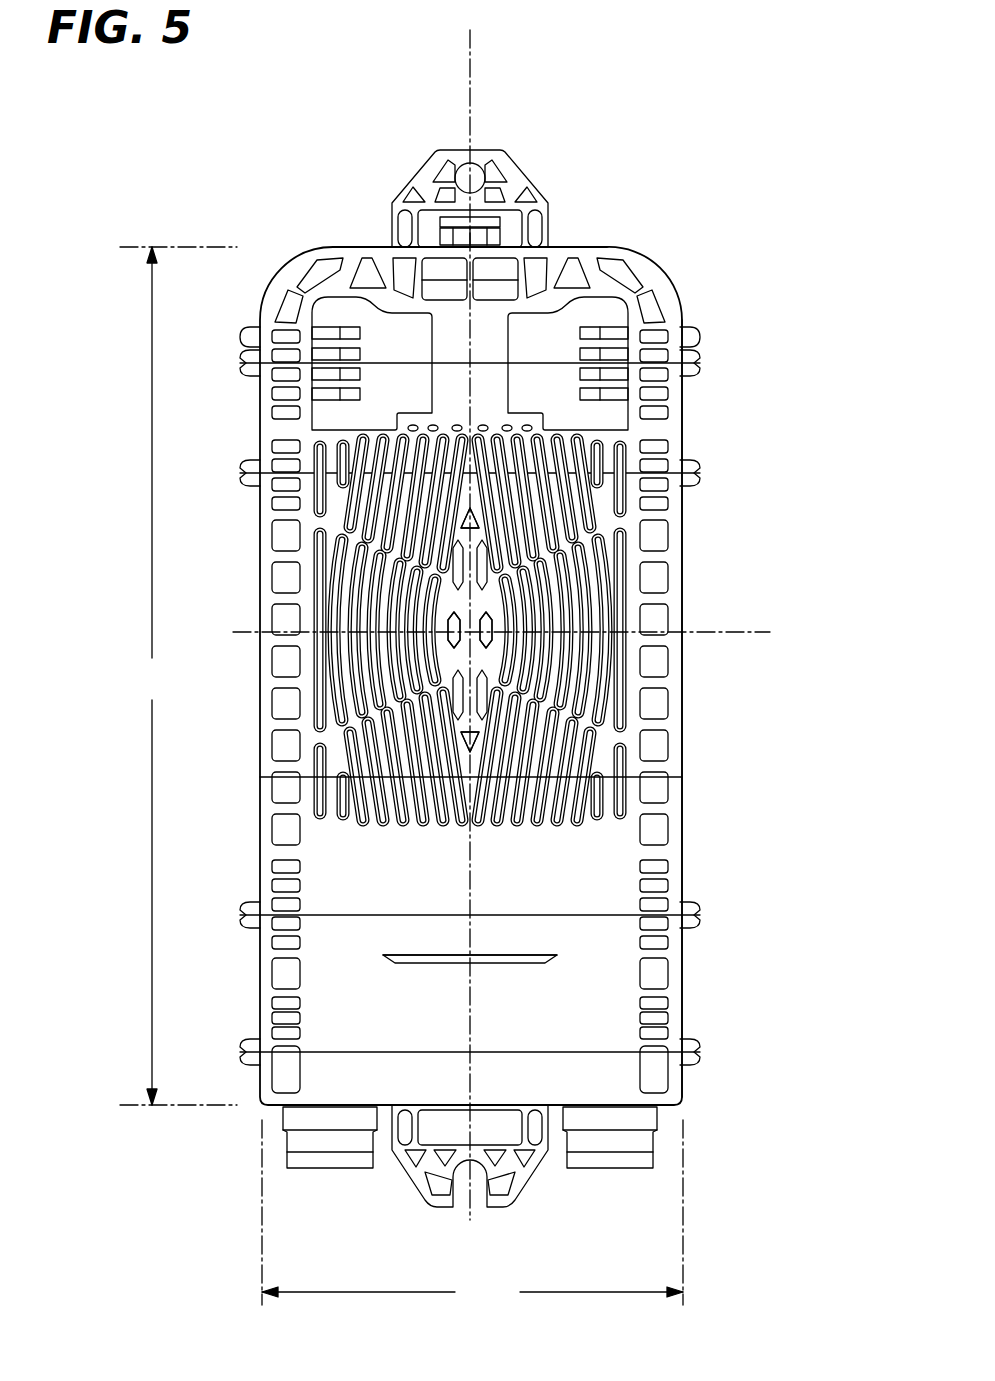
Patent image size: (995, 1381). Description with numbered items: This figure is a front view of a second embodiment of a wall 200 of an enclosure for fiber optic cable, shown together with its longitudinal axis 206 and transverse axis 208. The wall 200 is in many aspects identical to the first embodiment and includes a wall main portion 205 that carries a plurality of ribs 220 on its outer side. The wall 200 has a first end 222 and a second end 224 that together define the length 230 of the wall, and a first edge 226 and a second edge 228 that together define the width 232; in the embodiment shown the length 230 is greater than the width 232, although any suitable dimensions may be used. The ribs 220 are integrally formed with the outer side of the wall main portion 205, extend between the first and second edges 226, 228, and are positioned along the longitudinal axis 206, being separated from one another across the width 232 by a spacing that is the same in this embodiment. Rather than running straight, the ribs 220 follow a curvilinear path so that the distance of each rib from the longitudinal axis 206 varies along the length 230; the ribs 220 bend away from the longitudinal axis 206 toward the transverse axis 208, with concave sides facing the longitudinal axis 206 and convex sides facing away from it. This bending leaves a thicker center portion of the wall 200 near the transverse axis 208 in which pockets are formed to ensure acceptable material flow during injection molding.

The wall 200 is at (745, 122).
The wall main portion 205 is at (612, 972).
The longitudinal axis 206 is at (472, 58).
The transverse axis 208 is at (770, 632).
The ribs 220 is at (385, 615).
The first end 222 is at (593, 247).
The second end 224 is at (588, 1108).
The first edge 226 is at (258, 726).
The second edge 228 is at (683, 663).
The length 230 is at (178, 676).
The width 232 is at (472, 1214).